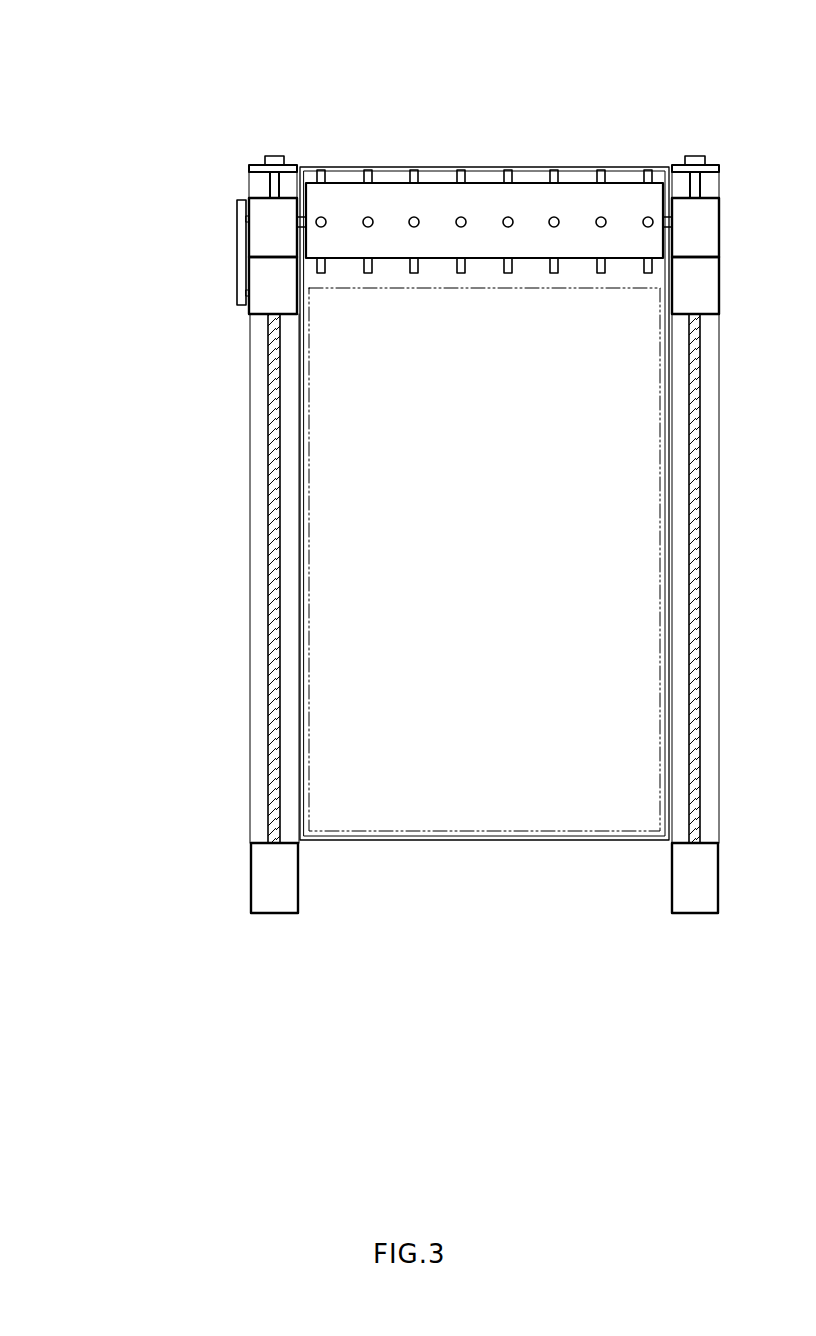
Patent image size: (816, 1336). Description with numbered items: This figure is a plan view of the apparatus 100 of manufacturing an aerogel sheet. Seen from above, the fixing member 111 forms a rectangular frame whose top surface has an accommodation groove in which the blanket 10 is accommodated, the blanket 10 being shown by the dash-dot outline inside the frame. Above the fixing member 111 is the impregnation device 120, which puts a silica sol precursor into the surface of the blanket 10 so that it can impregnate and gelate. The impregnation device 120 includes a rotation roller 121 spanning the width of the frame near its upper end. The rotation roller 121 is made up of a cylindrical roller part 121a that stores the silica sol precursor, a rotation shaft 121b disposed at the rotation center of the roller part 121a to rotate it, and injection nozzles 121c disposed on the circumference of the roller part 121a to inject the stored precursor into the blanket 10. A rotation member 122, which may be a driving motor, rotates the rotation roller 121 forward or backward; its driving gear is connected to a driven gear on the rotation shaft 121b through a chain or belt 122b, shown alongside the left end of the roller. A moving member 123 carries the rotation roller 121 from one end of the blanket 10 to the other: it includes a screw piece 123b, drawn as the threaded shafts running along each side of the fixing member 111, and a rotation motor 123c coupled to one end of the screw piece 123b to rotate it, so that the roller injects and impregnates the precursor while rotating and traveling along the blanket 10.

The apparatus of manufacturing an aerogel sheet 100 is at (599, 76).
The blanket 10 is at (578, 832).
The fixing member 111 is at (484, 841).
The impregnation device 120 is at (69, 638).
The rotation roller 121 is at (440, 102).
The roller part 121a is at (435, 168).
The rotation shaft 121b is at (249, 165).
The injection nozzle 121c is at (366, 168).
The rotation member 122 is at (248, 309).
The chain or belt 122b is at (237, 252).
The moving member 123 is at (129, 470).
The screw piece 123b is at (269, 465).
The rotation motor 123c is at (270, 876).